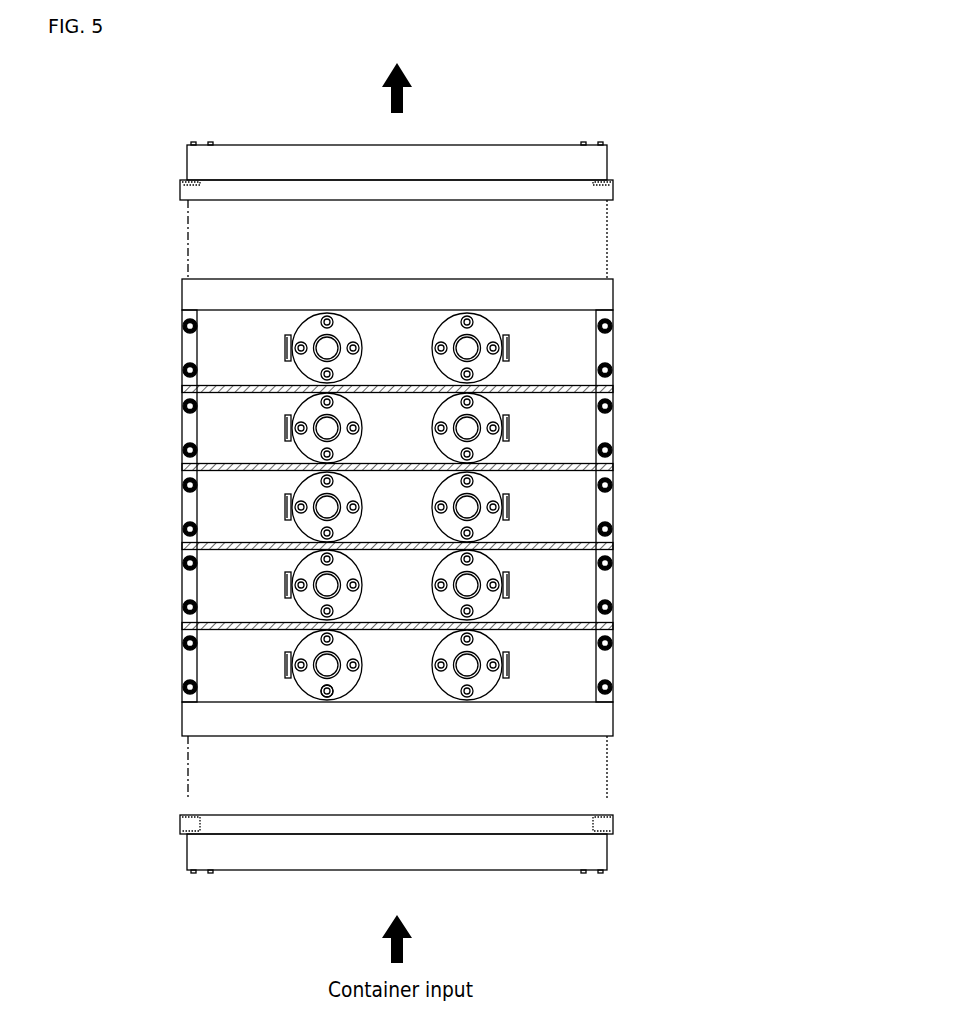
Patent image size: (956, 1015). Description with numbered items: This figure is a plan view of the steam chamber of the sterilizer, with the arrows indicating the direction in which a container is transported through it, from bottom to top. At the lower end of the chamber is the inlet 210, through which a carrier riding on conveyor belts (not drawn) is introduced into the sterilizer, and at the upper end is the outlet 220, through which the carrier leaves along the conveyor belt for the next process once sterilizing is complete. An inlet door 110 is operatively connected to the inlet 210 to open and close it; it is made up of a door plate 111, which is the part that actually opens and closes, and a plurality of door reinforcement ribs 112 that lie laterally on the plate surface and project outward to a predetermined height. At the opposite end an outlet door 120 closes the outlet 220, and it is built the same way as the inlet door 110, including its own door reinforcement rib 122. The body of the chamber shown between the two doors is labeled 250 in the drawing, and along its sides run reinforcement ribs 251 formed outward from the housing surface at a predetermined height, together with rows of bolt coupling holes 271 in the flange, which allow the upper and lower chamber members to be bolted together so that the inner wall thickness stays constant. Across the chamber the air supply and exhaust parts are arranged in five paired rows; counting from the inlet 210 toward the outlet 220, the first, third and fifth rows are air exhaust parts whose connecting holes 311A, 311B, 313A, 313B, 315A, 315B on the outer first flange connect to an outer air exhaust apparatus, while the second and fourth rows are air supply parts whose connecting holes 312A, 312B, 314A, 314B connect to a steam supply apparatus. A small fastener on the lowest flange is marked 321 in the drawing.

The inlet door 110 is at (465, 847).
The door plate 111 is at (560, 820).
The door reinforcement rib 112 is at (597, 190).
The outlet door 120 is at (443, 505).
The door reinforcement rib 122 is at (517, 150).
The inlet 210 is at (598, 717).
The outlet 220 is at (586, 292).
The side frame 250 is at (243, 682).
The reinforcement rib 251 is at (185, 547).
The bolt coupling hole 271 is at (186, 688).
The connecting hole 311A is at (327, 665).
The connecting hole 311B is at (467, 665).
The connecting hole 312A is at (327, 585).
The connecting hole 312B is at (467, 585).
The connecting hole 313A is at (327, 507).
The connecting hole 313B is at (467, 507).
The connecting hole 314A is at (327, 428).
The connecting hole 314B is at (467, 428).
The connecting hole 315A is at (327, 348).
The connecting hole 315B is at (467, 348).
The fastening bolt 321 is at (327, 697).